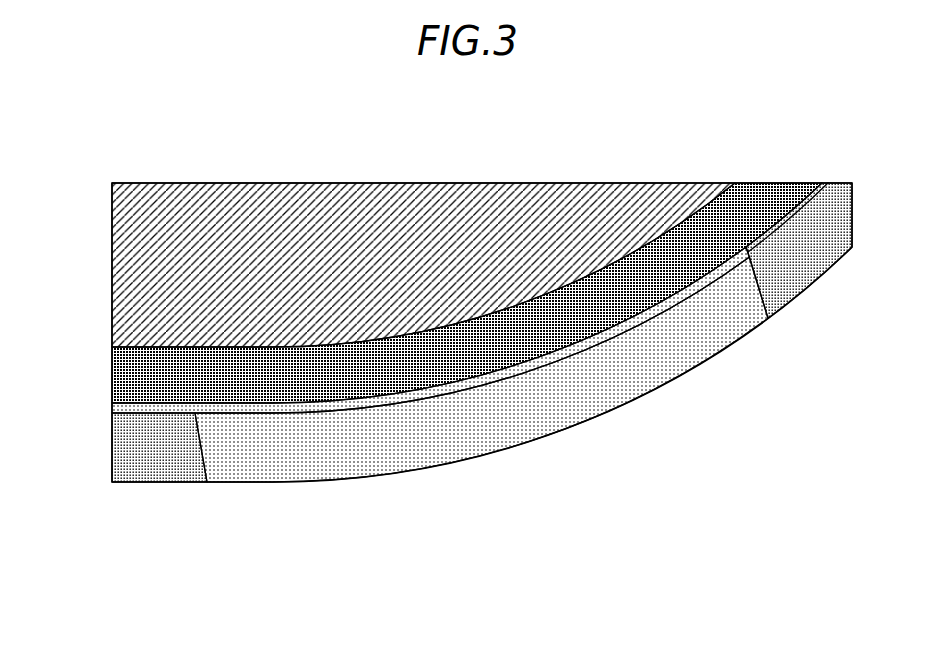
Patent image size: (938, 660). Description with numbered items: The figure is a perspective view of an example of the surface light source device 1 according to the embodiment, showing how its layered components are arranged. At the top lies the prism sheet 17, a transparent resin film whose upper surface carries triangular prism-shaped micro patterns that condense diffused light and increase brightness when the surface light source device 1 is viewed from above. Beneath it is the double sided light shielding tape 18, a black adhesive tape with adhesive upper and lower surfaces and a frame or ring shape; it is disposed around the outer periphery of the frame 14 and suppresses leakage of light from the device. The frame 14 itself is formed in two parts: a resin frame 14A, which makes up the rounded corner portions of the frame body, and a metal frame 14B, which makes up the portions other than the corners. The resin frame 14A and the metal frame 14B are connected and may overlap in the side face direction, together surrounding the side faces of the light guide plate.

The surface light source device 1 is at (97, 218).
The prism sheet 17 is at (128, 278).
The double sided light shielding tape 18 is at (128, 375).
The frame 14 is at (482, 407).
The resin frame 14A is at (518, 412).
The metal frame 14B is at (845, 420).